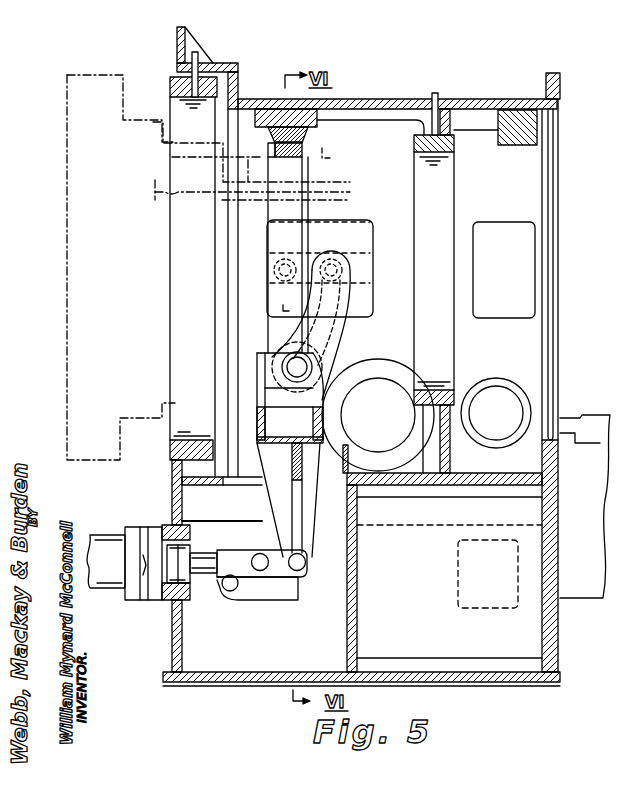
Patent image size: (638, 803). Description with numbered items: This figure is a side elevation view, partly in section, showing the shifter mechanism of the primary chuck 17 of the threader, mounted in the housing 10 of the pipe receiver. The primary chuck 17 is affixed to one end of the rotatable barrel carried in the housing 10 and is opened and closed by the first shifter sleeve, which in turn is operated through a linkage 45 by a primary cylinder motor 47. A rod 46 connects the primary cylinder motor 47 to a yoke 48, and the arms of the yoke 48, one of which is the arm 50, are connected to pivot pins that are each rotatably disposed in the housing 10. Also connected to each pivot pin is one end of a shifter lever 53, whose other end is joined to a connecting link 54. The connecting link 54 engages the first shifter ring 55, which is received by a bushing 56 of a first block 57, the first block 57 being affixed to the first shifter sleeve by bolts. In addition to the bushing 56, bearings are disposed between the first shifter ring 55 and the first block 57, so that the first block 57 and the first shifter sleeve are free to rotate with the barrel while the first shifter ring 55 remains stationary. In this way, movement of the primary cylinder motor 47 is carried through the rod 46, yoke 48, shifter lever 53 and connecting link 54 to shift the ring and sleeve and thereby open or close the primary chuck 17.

The housing 10 is at (380, 99).
The primary chuck 17 is at (65, 104).
The linkage 45 is at (347, 330).
The rod 46 is at (200, 573).
The primary cylinder motor 47 is at (120, 535).
The yoke 48 is at (288, 500).
The arm 50 is at (318, 425).
The shifter lever 53 is at (350, 283).
The connecting link 54 is at (306, 255).
The first shifter ring 55 is at (300, 152).
The bushing 56 is at (280, 153).
The first block 57 is at (331, 152).